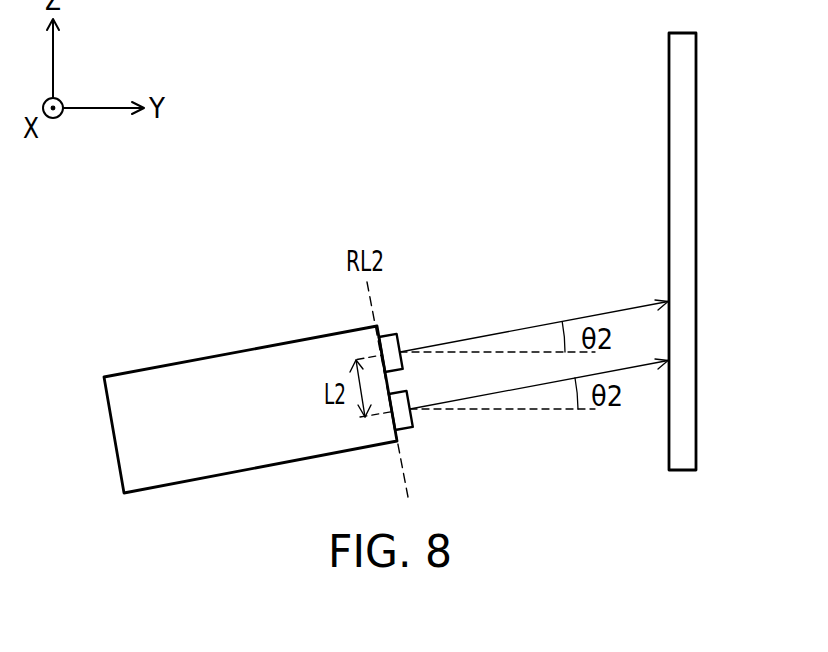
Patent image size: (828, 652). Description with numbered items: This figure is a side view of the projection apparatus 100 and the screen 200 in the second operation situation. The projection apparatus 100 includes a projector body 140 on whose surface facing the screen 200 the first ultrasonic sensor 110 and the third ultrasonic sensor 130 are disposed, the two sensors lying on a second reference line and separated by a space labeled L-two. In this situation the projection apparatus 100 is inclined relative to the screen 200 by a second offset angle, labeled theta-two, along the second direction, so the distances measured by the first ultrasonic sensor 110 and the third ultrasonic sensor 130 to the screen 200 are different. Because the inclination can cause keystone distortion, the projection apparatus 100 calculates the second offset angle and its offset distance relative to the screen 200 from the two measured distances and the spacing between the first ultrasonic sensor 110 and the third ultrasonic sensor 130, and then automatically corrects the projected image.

The projection apparatus 100 is at (215, 275).
The first ultrasonic sensor 110 is at (410, 421).
The third ultrasonic sensor 130 is at (384, 337).
The projector body 140 is at (165, 385).
The screen 200 is at (681, 460).